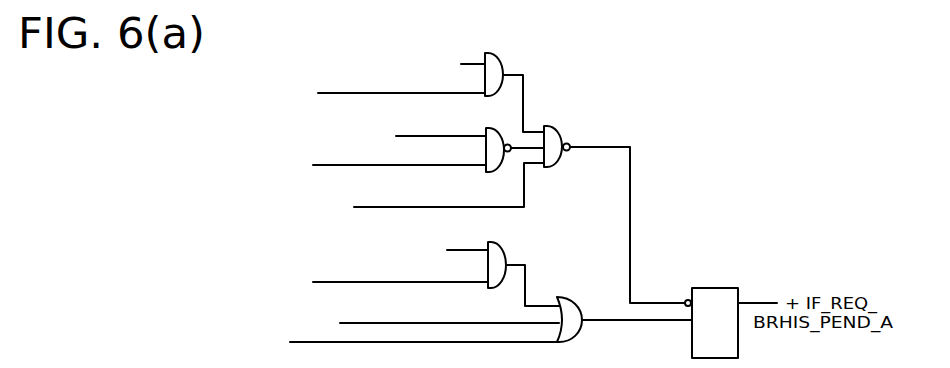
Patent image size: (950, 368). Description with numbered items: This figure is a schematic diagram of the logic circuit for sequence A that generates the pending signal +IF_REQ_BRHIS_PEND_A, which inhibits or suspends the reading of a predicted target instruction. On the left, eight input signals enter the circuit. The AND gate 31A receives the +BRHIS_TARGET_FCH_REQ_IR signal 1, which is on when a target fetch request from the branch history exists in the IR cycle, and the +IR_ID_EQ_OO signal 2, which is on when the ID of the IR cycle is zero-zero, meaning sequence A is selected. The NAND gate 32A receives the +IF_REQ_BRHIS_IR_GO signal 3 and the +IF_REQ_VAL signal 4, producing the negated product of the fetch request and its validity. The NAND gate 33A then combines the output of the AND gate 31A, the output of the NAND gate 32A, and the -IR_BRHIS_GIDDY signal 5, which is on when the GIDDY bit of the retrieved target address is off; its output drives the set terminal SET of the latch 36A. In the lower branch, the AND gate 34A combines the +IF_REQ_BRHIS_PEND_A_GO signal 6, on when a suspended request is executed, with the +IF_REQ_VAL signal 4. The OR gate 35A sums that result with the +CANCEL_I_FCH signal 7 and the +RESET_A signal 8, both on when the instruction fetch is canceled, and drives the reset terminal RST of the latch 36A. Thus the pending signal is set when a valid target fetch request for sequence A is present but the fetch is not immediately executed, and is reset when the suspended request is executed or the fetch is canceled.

The +BRHIS_TARGET_FCH_REQ_IR signal 1 is at (320, 66).
The +IR_ID_EQ_00 signal 2 is at (320, 95).
The +IF_REQ_BRHIS_IR_GO signal 3 is at (320, 138).
The +IF_REQ_VAL signal 4 is at (321, 226).
The -IR_BRHIS_GIDDY signal 5 is at (349, 192).
The +IF_REQ_BRHIS_PEND_A_GO signal 6 is at (321, 253).
The +CANCEL_I_FCH signal 7 is at (357, 324).
The +RESET_A signal 8 is at (356, 345).
The AND gate 31A is at (504, 61).
The NAND gate 32A is at (490, 172).
The NAND gate 33A is at (560, 127).
The AND gate 34A is at (506, 251).
The OR gate 35A is at (566, 296).
The latch 36A is at (705, 288).